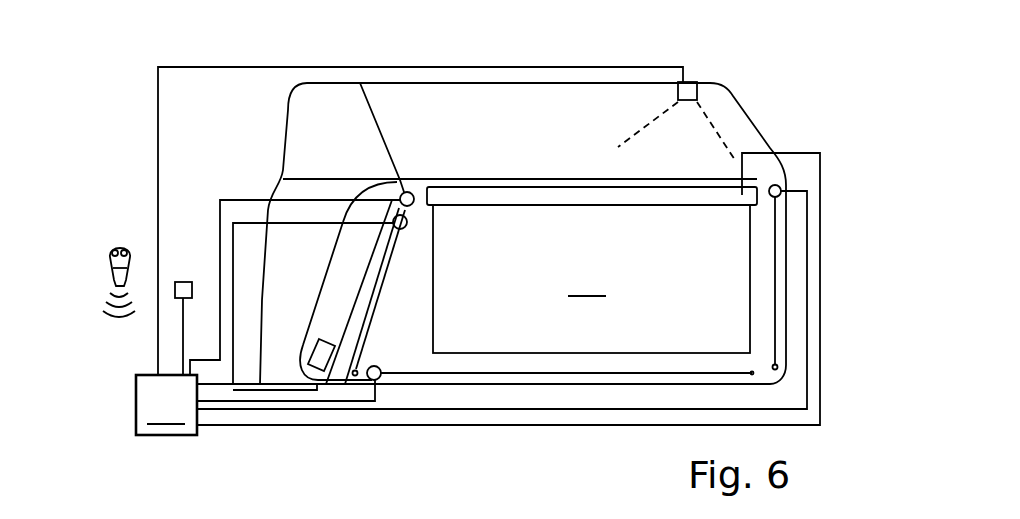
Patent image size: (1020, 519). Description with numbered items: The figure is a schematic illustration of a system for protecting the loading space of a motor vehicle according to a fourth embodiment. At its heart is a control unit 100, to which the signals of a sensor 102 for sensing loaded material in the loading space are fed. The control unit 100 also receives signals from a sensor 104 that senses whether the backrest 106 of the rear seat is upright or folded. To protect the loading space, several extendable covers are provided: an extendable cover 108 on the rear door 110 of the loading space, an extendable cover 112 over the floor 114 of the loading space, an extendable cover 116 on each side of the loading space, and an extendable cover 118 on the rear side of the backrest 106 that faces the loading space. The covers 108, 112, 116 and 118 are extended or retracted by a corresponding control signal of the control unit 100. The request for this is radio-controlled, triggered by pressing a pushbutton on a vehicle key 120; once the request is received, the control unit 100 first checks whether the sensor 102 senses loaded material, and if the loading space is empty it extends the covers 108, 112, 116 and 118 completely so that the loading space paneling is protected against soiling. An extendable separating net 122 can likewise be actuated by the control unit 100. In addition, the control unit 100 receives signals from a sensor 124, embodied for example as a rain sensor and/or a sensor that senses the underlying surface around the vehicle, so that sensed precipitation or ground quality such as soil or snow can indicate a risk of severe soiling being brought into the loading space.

The control unit 100 is at (166, 405).
The sensor 102 is at (690, 84).
The sensor 104 is at (322, 360).
The backrest 106 is at (347, 246).
The extendable cover 108 is at (778, 258).
The rear door 110 is at (740, 100).
The extendable cover 112 is at (472, 376).
The floor 114 is at (585, 386).
The extendable cover 116 is at (592, 270).
The extendable cover 118 is at (383, 288).
The vehicle key 120 is at (110, 254).
The separating net 122 is at (405, 196).
The sensor 124 is at (176, 283).